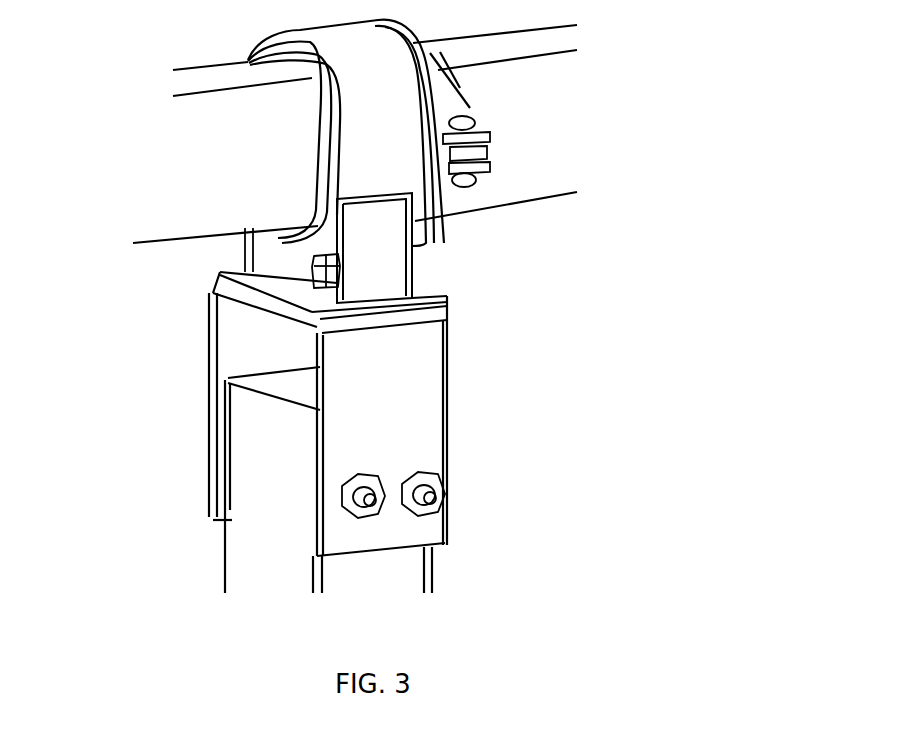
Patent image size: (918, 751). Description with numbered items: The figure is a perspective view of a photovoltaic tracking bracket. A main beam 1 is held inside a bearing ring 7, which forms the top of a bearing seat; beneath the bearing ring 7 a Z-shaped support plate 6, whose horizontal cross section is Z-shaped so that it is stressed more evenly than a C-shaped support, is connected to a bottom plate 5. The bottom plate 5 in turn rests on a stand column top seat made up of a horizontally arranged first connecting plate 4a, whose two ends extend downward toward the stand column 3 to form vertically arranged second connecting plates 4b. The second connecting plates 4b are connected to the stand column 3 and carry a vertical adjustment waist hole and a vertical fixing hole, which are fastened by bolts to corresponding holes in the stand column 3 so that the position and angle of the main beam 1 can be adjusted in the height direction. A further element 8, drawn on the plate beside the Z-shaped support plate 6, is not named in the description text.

The main beam 1 is at (547, 175).
The stand column 3 is at (255, 548).
The first connecting plate 4a is at (312, 322).
The second connecting plate 4b is at (213, 420).
The bottom plate 5 is at (398, 308).
The Z-shaped support plate 6 is at (392, 265).
The bearing ring 7 is at (407, 167).
The fastening nut 8 is at (316, 263).